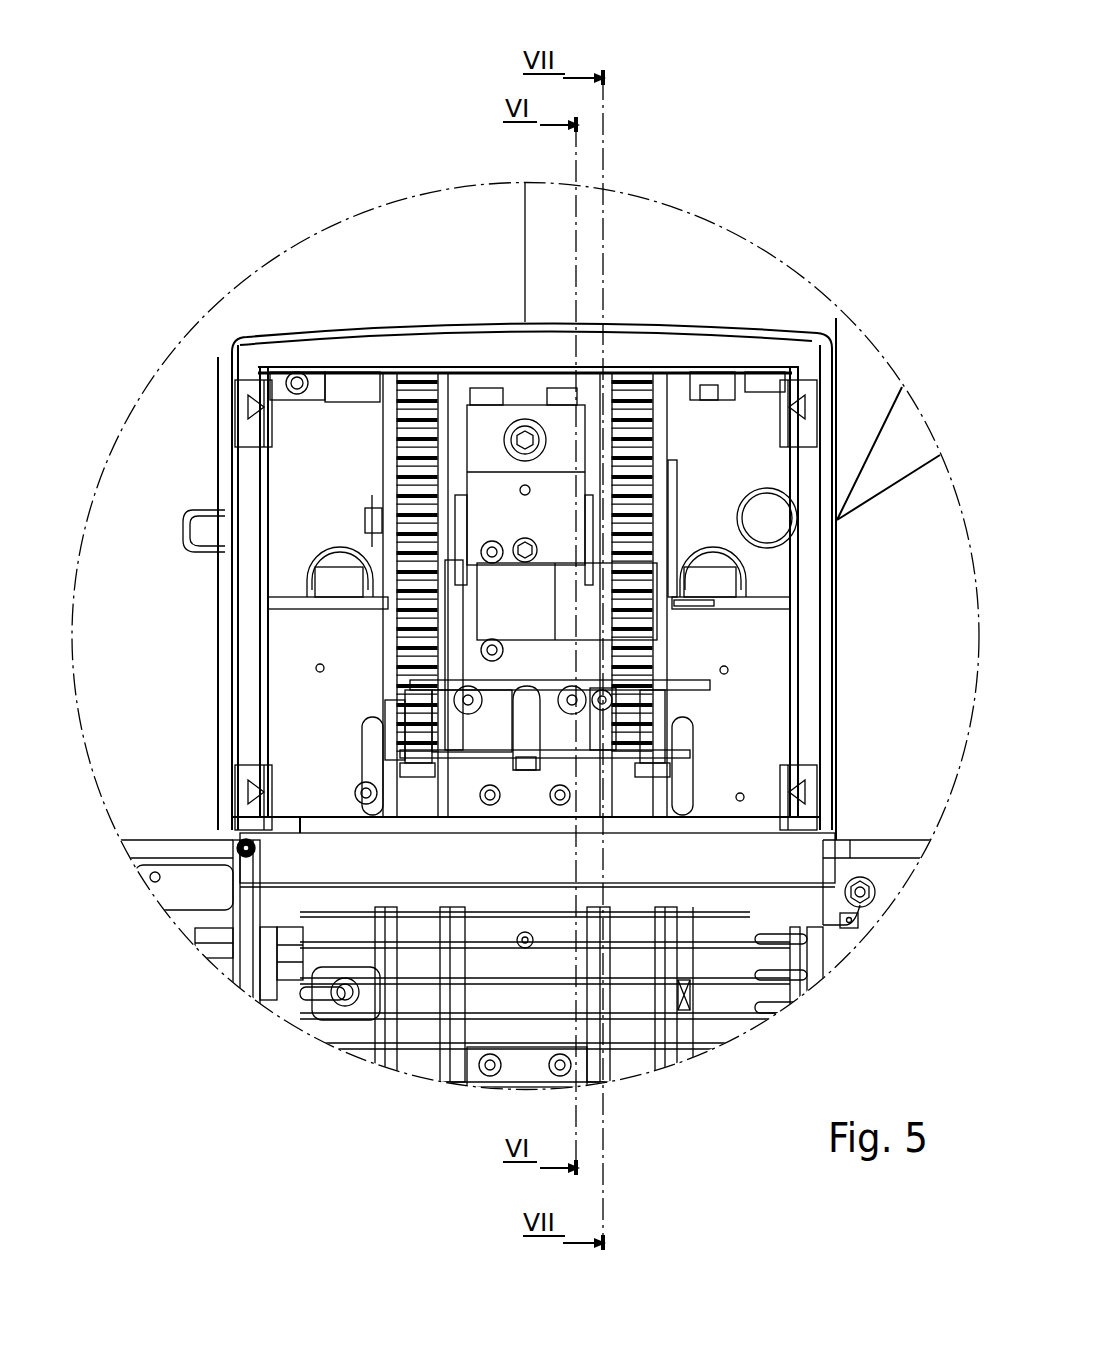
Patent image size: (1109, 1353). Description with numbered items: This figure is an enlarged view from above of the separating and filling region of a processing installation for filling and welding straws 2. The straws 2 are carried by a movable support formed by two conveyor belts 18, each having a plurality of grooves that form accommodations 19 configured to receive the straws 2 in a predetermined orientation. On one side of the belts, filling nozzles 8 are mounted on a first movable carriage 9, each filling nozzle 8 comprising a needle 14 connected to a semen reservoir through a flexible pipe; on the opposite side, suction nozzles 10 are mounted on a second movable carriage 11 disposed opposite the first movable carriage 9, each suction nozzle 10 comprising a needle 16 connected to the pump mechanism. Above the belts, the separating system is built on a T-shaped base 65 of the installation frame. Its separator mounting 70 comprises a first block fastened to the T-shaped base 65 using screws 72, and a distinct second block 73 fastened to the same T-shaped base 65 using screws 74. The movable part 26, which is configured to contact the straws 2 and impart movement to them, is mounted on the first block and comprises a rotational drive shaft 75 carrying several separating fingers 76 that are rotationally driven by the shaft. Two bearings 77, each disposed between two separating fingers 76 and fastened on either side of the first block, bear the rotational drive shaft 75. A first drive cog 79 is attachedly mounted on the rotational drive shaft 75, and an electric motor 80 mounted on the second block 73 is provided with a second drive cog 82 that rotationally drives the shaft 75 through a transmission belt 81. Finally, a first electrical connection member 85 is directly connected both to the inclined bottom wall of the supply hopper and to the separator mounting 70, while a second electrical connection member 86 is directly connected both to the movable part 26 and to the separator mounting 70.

The straws 2 is at (495, 940).
The filling nozzles 8 is at (848, 890).
The first movable carriage 9 is at (740, 940).
The suction nozzles 10 is at (272, 930).
The second movable carriage 11 is at (185, 922).
The needle 14 is at (770, 935).
The needle 16 is at (303, 940).
The conveyor belts 18 is at (412, 1057).
The accommodations 19 is at (442, 1083).
The movable part 26 is at (683, 692).
The T-shaped base 65 is at (480, 478).
The separator mounting 70 is at (555, 690).
The screws 72 is at (468, 700).
The second block 73 is at (478, 546).
The screws 74 is at (494, 638).
The rotational drive shaft 75 is at (482, 740).
The separating fingers 76 is at (402, 742).
The bearings 77 is at (410, 726).
The first drive cog 79 is at (420, 762).
The electric motor 80 is at (567, 578).
The transmission belt 81 is at (302, 670).
The second drive cog 82 is at (440, 616).
The first electrical connection member 85 is at (600, 760).
The second electrical connection member 86 is at (572, 742).